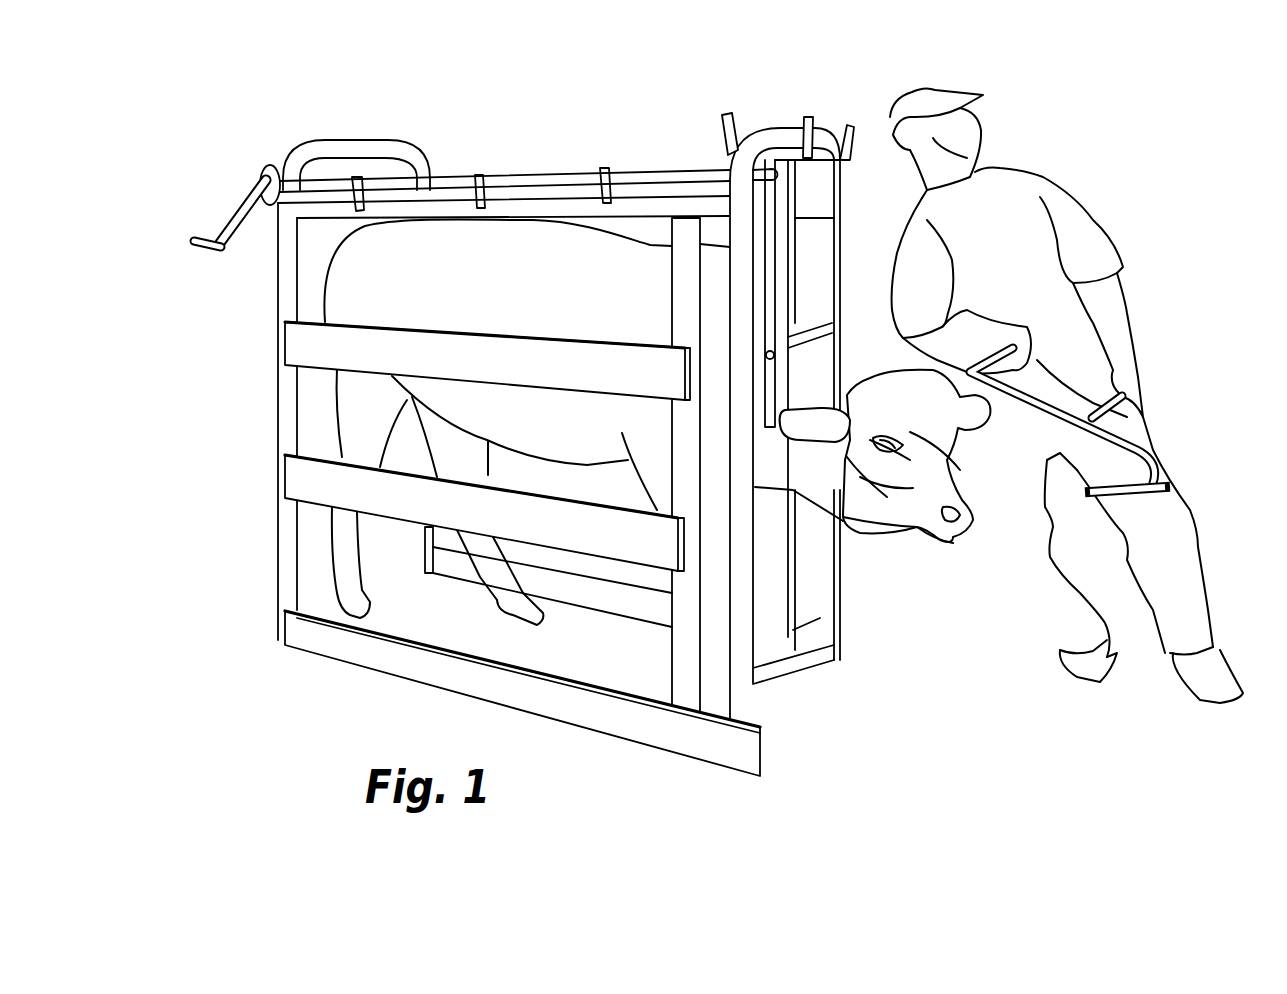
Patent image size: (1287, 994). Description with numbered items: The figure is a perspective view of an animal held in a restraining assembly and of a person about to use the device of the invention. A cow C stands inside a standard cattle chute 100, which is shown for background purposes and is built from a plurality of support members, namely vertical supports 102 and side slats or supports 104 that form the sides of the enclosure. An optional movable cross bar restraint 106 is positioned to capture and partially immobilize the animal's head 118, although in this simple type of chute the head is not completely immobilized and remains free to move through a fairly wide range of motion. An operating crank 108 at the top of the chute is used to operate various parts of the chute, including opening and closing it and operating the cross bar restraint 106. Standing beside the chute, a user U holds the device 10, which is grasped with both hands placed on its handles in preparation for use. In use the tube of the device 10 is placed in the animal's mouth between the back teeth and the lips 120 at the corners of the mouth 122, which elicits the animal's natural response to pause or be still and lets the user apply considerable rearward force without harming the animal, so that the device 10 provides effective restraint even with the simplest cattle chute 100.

The cattle chute 100 is at (579, 123).
The vertical supports 102 is at (288, 557).
The side slats or supports 104 is at (322, 348).
The movable cross bar restraint 106 is at (800, 343).
The operating crank 108 is at (224, 235).
The animal's head 118 is at (803, 513).
The lips 120 is at (948, 537).
The corners of the mouth 122 is at (920, 538).
The device 10 is at (1147, 448).
The user U is at (1062, 160).
The cow C is at (877, 344).